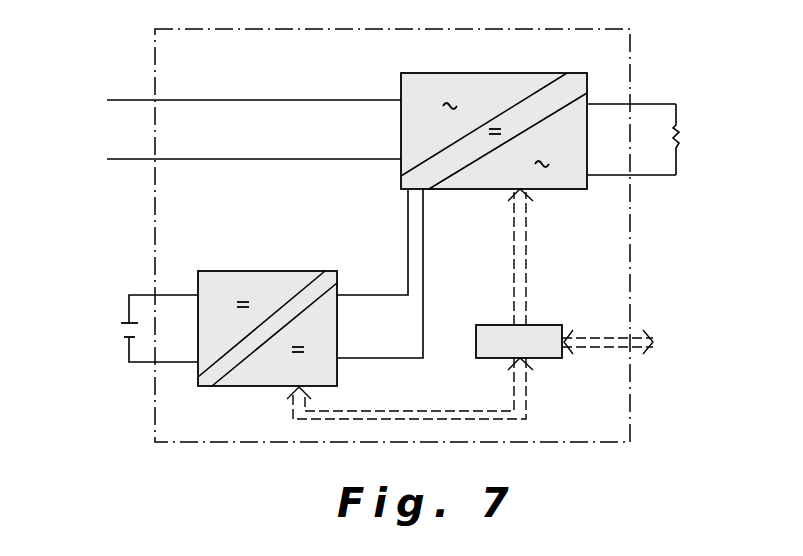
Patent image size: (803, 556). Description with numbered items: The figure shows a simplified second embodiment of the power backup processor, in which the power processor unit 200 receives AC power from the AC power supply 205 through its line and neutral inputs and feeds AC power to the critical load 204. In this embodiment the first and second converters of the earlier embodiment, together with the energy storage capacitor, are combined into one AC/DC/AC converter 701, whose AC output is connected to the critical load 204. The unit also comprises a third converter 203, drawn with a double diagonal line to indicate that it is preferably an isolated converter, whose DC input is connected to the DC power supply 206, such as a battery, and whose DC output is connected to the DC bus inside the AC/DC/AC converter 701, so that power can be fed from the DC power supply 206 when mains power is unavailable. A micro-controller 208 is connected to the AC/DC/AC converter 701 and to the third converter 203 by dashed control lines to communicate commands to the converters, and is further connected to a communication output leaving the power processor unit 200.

The power processor unit 200 is at (630, 48).
The AC power supply 205 is at (116, 129).
The AC/DC/AC converter 701 is at (495, 73).
The critical load 204 is at (681, 138).
The third converter 203 is at (270, 271).
The DC power supply 206 is at (129, 320).
The micro-controller 208 is at (550, 325).